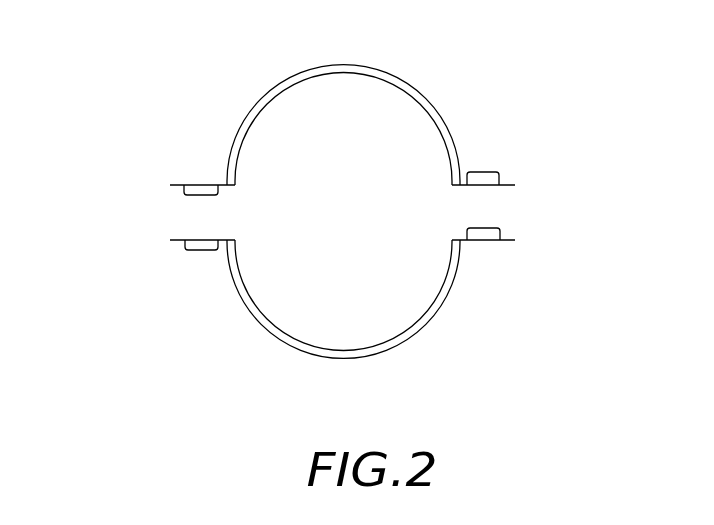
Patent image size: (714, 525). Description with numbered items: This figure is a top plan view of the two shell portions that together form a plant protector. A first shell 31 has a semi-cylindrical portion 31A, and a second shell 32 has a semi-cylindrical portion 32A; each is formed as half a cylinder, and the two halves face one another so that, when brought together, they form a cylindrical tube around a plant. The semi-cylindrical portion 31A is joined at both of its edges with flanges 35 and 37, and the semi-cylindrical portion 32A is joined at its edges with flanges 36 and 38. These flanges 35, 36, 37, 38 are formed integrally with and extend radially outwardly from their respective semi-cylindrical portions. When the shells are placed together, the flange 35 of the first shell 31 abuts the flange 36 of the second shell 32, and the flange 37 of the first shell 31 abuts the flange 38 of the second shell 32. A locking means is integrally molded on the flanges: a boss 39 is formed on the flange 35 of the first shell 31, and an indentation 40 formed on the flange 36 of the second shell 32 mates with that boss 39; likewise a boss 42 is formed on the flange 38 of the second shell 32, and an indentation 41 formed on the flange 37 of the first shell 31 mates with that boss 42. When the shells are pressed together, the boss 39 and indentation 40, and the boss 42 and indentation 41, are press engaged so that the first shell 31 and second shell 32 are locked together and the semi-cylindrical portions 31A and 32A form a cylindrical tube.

The first shell 31 is at (349, 123).
The semi-cylindrical portion 31A is at (293, 73).
The second shell 32 is at (352, 311).
The semi-cylindrical portion 32A is at (394, 352).
The flange 35 is at (170, 182).
The flange 36 is at (172, 246).
The flange 37 is at (520, 184).
The flange 38 is at (517, 243).
The boss 39 is at (178, 198).
The indentation 40 is at (199, 253).
The indentation 41 is at (496, 170).
The boss 42 is at (503, 226).